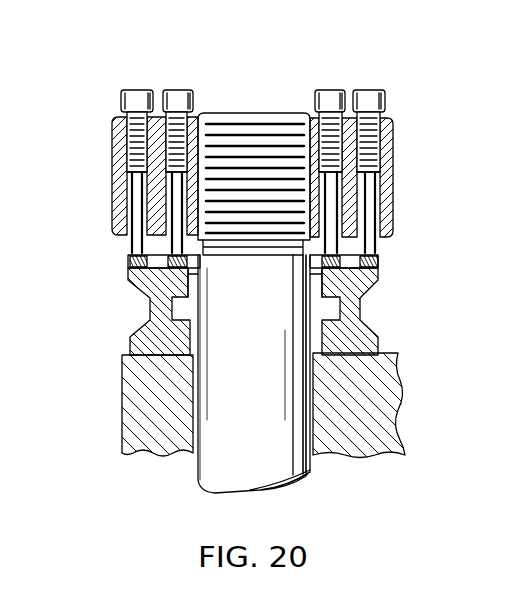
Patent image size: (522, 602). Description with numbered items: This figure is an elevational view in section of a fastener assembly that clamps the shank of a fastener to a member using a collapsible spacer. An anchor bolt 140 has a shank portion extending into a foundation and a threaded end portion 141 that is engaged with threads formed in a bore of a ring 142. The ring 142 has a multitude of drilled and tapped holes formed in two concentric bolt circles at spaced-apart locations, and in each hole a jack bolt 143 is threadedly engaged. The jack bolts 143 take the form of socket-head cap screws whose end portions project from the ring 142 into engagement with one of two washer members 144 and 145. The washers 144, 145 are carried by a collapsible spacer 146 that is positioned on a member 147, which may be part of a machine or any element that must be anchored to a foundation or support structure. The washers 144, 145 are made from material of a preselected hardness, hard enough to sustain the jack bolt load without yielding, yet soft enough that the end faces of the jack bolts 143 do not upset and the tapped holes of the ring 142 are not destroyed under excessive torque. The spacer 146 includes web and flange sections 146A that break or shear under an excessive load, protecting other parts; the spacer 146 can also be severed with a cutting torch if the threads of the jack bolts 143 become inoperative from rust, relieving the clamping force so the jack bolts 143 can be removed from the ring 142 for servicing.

The anchor bolt 140 is at (262, 389).
The threaded end portion 141 is at (244, 123).
The ring 142 is at (110, 196).
The jack bolts 143 is at (181, 90).
The washer member 144 is at (130, 263).
The washer member 145 is at (190, 264).
The collapsible spacer 146 is at (140, 340).
The web and flange sections 146A is at (373, 283).
The member 147 is at (407, 425).